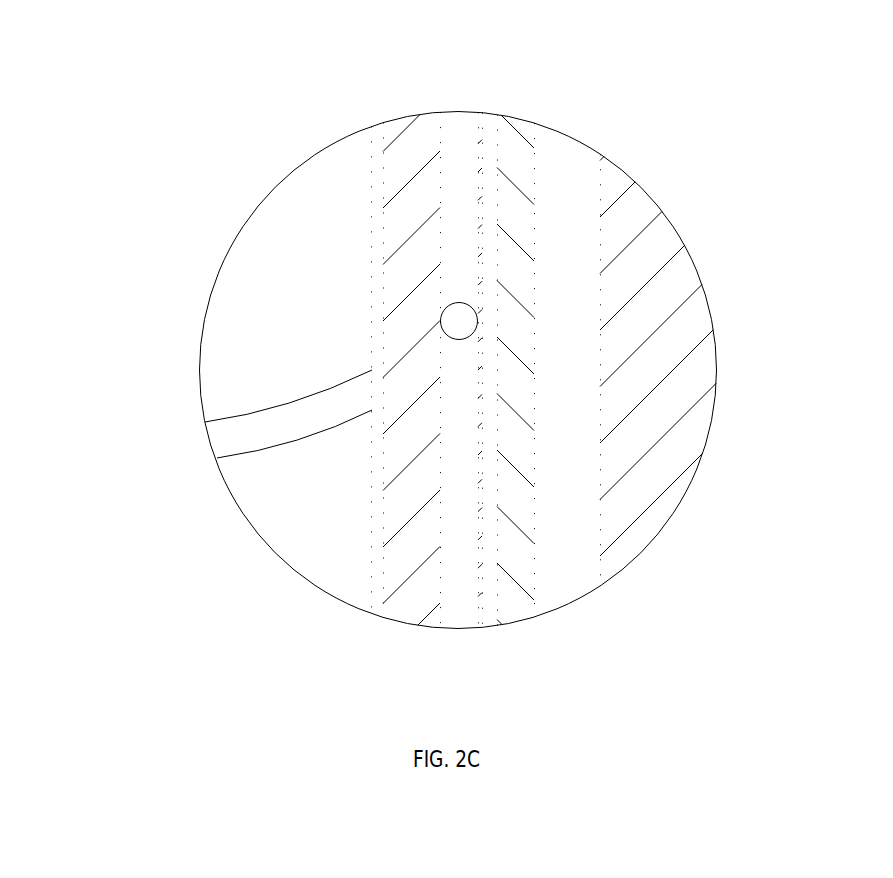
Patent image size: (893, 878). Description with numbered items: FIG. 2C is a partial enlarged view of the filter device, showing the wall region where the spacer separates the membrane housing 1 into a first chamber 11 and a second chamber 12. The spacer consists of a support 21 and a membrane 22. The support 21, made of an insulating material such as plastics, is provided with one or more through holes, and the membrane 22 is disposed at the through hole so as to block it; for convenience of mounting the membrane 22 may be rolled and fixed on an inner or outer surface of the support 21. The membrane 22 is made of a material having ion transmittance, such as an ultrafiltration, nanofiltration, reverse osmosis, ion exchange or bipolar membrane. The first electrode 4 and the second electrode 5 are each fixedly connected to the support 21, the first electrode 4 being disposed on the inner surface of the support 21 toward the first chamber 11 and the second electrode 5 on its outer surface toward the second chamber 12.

The membrane housing 1 is at (635, 205).
The first electrode 4 is at (452, 332).
The second electrode 5 is at (523, 570).
The first chamber 11 is at (245, 342).
The second chamber 12 is at (568, 158).
The support 21 is at (416, 152).
The membrane 22 is at (480, 618).